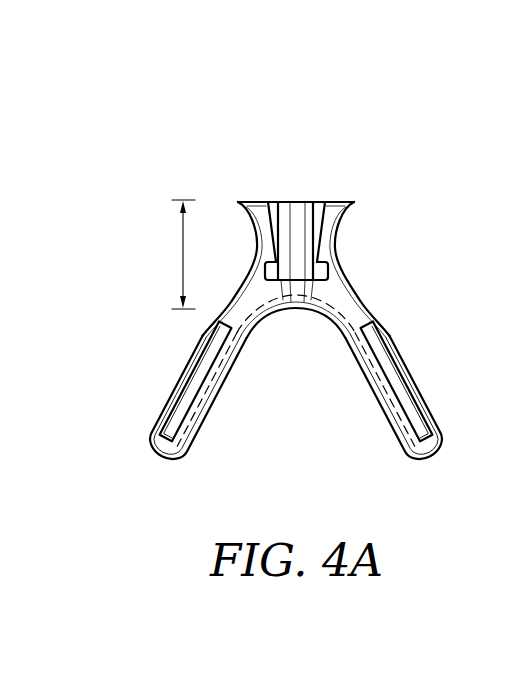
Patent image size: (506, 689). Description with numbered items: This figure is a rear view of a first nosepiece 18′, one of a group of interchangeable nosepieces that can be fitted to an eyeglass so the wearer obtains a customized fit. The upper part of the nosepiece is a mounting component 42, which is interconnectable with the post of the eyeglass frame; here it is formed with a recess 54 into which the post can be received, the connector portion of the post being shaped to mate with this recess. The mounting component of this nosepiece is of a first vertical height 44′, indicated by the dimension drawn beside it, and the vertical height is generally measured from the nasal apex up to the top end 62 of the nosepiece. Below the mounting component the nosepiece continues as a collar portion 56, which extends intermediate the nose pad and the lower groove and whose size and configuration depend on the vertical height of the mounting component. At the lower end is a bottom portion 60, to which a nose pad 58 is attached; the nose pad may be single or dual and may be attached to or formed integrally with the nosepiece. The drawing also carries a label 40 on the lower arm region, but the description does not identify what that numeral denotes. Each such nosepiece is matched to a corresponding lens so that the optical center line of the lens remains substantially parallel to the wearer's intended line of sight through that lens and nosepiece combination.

The first nosepiece 18′ is at (440, 128).
The arm 40 is at (211, 410).
The mounting component 42 is at (336, 298).
The first vertical height 44′ is at (183, 232).
The recess 54 is at (309, 238).
The collar portion 56 is at (196, 370).
The nose pad 58 is at (412, 425).
The bottom portion 60 is at (365, 374).
The top end 62 is at (260, 200).